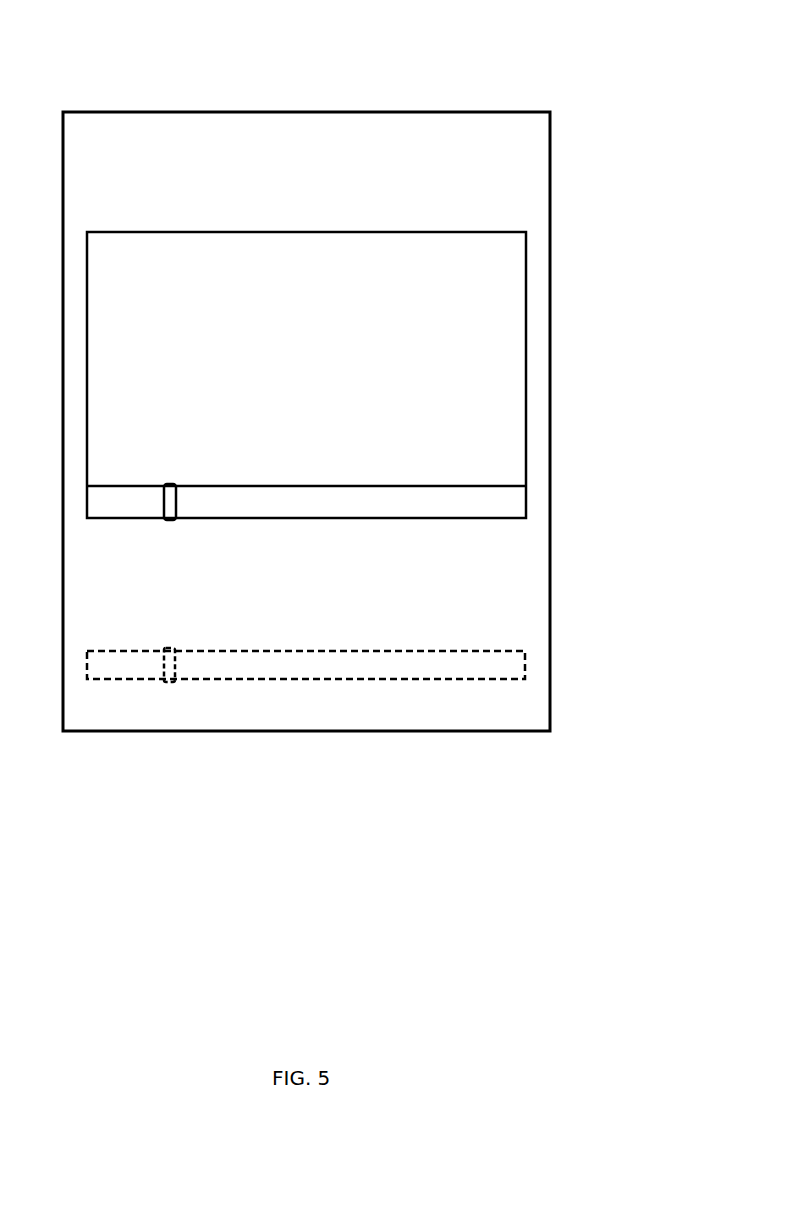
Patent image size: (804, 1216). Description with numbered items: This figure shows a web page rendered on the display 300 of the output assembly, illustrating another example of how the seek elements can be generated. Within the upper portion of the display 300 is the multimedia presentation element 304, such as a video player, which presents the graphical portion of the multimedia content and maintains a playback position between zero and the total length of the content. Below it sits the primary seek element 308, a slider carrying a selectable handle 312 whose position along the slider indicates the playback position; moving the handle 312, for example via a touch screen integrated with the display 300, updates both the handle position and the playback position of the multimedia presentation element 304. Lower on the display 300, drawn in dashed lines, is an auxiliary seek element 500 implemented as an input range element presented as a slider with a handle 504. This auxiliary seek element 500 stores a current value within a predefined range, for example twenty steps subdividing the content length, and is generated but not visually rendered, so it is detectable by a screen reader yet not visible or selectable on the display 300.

The display 300 is at (128, 98).
The multimedia presentation element 304 is at (526, 326).
The primary seek element 308 is at (428, 518).
The handle 312 is at (170, 520).
The auxiliary seek element 500 is at (125, 680).
The handle 504 is at (170, 682).